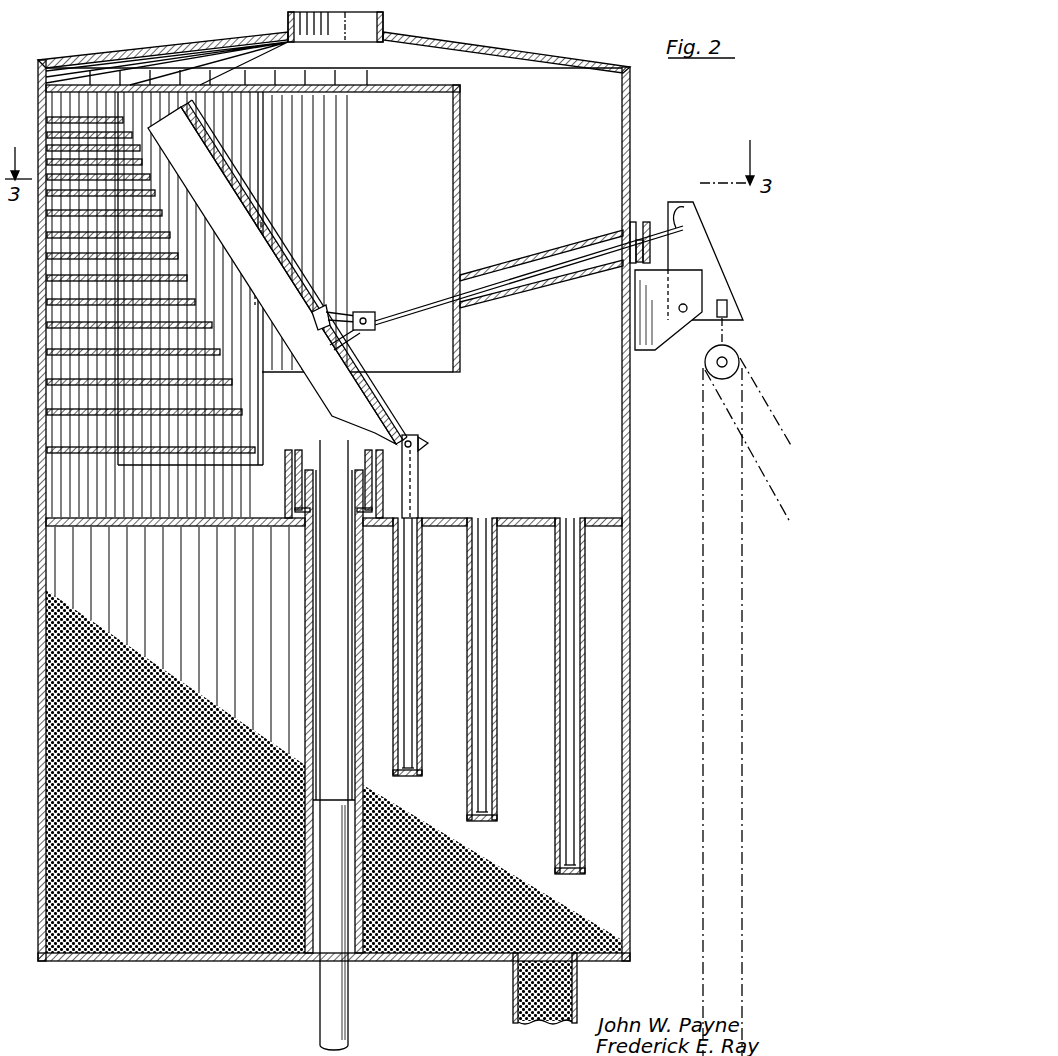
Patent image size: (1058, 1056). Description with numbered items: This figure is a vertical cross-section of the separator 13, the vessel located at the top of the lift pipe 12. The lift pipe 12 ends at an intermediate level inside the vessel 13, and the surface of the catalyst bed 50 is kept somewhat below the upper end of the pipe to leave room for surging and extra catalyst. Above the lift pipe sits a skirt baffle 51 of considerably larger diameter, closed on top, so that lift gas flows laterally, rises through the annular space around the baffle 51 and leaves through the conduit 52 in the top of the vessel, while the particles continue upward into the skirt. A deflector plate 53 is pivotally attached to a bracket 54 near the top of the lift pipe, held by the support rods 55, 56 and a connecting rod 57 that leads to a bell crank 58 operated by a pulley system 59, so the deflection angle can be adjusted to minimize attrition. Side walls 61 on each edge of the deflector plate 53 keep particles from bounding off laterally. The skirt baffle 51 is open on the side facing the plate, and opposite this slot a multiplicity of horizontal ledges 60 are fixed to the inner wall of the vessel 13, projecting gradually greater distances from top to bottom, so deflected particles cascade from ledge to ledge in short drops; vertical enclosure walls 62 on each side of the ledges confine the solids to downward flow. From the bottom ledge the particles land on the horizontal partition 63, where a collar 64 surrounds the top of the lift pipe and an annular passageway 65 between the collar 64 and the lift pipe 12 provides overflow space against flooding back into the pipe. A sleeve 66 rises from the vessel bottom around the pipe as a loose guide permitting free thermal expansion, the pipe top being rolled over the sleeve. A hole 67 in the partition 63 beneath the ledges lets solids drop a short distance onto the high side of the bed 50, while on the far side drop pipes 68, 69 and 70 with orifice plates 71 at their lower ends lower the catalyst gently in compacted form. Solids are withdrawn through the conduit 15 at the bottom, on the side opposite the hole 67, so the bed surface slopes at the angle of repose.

The lift pipe 12 is at (315, 1017).
The separator vessel 13 is at (631, 856).
The conduit 15 is at (513, 979).
The bed 50 is at (263, 625).
The skirt baffle 51 is at (461, 213).
The conduit 52 is at (386, 30).
The deflector plate 53 is at (221, 173).
The bracket 54 is at (420, 474).
The support rod 55 is at (333, 312).
The support rod 56 is at (347, 328).
The connecting rod 57 is at (529, 282).
The bell crank 58 is at (707, 238).
The pulley system 59 is at (703, 366).
The horizontal ledges 60 is at (60, 119).
The side walls 61 is at (252, 278).
The vertical enclosure walls 62 is at (215, 98).
The horizontal partition 63 is at (527, 517).
The collar 64 is at (285, 507).
The annular passageway 65 is at (299, 456).
The sleeve 66 is at (367, 695).
The hole 67 is at (130, 518).
The drop pipe 68 is at (420, 706).
The drop pipe 69 is at (497, 683).
The drop pipe 70 is at (586, 669).
The orifice plate 71 is at (418, 778).